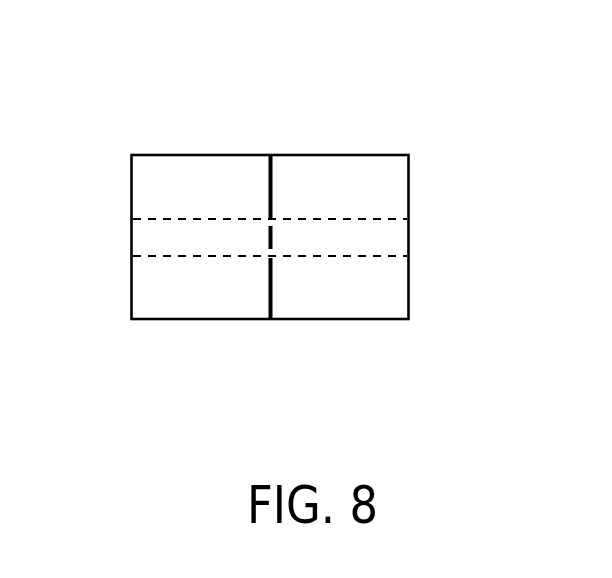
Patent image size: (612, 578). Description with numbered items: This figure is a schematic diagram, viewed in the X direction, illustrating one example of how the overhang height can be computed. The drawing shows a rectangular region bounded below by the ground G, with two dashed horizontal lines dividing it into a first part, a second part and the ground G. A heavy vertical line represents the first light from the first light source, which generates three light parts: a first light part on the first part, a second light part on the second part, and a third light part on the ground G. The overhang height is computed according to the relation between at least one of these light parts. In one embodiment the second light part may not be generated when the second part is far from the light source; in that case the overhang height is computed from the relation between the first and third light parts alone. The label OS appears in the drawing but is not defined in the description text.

The optical sensor / object surface OS is at (285, 203).
The ground G is at (395, 295).